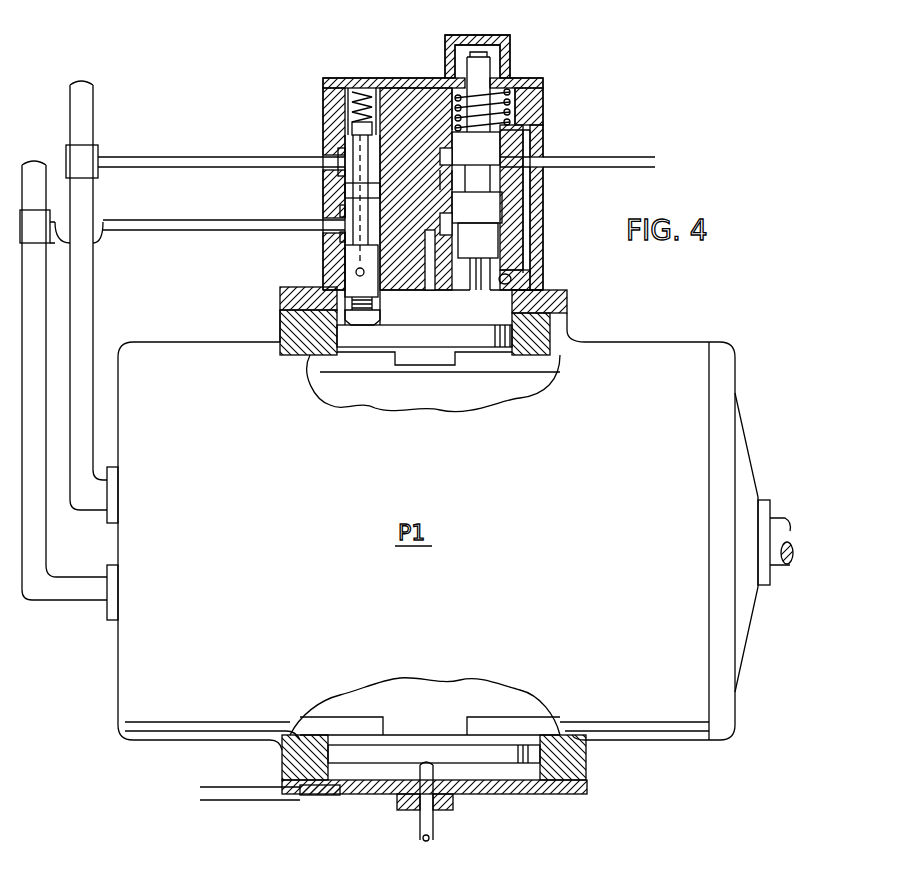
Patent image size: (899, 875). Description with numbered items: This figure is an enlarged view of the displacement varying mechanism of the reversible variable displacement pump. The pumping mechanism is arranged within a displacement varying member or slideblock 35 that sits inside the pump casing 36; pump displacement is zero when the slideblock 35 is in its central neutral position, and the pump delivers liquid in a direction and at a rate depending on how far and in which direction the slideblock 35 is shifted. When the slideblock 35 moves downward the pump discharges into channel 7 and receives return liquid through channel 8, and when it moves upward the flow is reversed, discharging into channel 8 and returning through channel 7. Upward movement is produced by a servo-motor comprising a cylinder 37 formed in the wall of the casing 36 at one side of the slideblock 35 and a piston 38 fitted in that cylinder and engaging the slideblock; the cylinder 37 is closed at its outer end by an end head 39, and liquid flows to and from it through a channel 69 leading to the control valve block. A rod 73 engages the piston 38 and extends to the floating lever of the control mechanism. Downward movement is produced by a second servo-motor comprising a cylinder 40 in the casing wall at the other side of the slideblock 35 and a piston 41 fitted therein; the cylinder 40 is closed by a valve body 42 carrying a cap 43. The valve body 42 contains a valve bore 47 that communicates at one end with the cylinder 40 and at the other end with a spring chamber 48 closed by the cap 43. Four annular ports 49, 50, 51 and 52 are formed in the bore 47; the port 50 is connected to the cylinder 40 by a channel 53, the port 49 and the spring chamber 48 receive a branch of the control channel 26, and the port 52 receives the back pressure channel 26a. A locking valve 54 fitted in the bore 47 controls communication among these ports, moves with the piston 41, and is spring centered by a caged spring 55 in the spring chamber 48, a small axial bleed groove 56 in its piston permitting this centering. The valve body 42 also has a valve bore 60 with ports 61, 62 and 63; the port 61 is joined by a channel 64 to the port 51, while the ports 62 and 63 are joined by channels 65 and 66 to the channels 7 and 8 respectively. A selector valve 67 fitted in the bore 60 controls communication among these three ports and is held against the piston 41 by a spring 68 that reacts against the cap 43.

The channel 7 is at (68, 605).
The channel 8 is at (80, 293).
The control channel 26 is at (592, 157).
The back pressure channel 26a is at (476, 162).
The slideblock 35 is at (470, 398).
The casing 36 is at (650, 718).
The cylinder 37 is at (560, 770).
The piston 38 is at (380, 764).
The end head 39 is at (580, 792).
The cylinder 40 is at (570, 313).
The piston 41 is at (430, 346).
The valve body 42 is at (545, 222).
The cap 43 is at (323, 82).
The valve bore 47 is at (560, 292).
The spring chamber 48 is at (538, 100).
The port 49 is at (548, 291).
The port 50 is at (446, 230).
The port 51 is at (477, 225).
The port 52 is at (445, 157).
The channel 53 is at (428, 290).
The locking valve 54 is at (505, 285).
The caged spring 55 is at (530, 110).
The bleed groove 56 is at (470, 290).
The valve bore 60 is at (340, 240).
The port 61 is at (343, 187).
The port 62 is at (340, 215).
The port 63 is at (338, 158).
The channel 64 is at (446, 195).
The channel 65 is at (200, 220).
The channel 66 is at (193, 157).
The selector valve 67 is at (348, 262).
The spring 68 is at (350, 104).
The channel 69 is at (250, 802).
The rod 73 is at (420, 831).